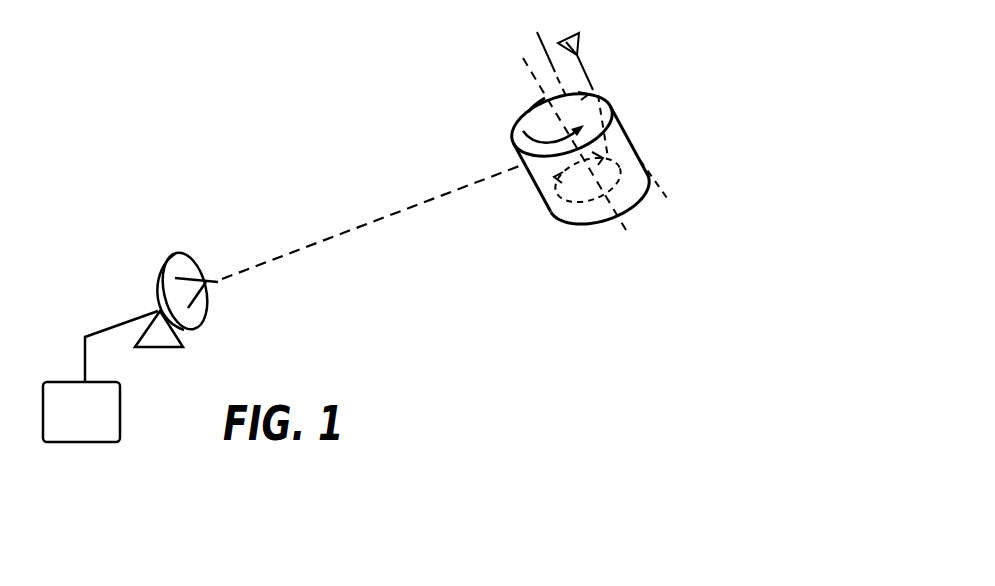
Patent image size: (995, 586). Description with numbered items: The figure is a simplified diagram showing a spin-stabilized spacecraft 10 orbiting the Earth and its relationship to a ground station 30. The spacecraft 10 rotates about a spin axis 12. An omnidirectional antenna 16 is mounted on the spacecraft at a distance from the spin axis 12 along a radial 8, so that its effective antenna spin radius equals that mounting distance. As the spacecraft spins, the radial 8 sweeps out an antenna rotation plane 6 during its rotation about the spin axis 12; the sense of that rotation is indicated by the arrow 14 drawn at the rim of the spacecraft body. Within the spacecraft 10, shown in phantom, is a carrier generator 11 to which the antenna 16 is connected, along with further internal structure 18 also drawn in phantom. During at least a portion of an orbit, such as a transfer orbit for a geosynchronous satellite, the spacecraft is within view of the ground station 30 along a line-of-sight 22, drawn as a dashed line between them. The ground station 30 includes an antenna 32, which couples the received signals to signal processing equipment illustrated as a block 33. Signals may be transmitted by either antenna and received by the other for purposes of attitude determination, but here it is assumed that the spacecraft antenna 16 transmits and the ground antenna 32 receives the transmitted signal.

The antenna rotation plane 6 is at (528, 112).
The radial 8 is at (560, 53).
The spin-stabilized spacecraft 10 is at (528, 232).
The carrier generator 11 is at (644, 158).
The spin axis 12 is at (523, 56).
The spin direction arrow 14 is at (516, 143).
The omnidirectional antenna 16 is at (584, 58).
The internal instrument 18 is at (627, 126).
The line-of-sight 22 is at (383, 218).
The ground station 30 is at (151, 299).
The antenna 32 is at (153, 287).
The signal processing equipment 33 is at (120, 403).